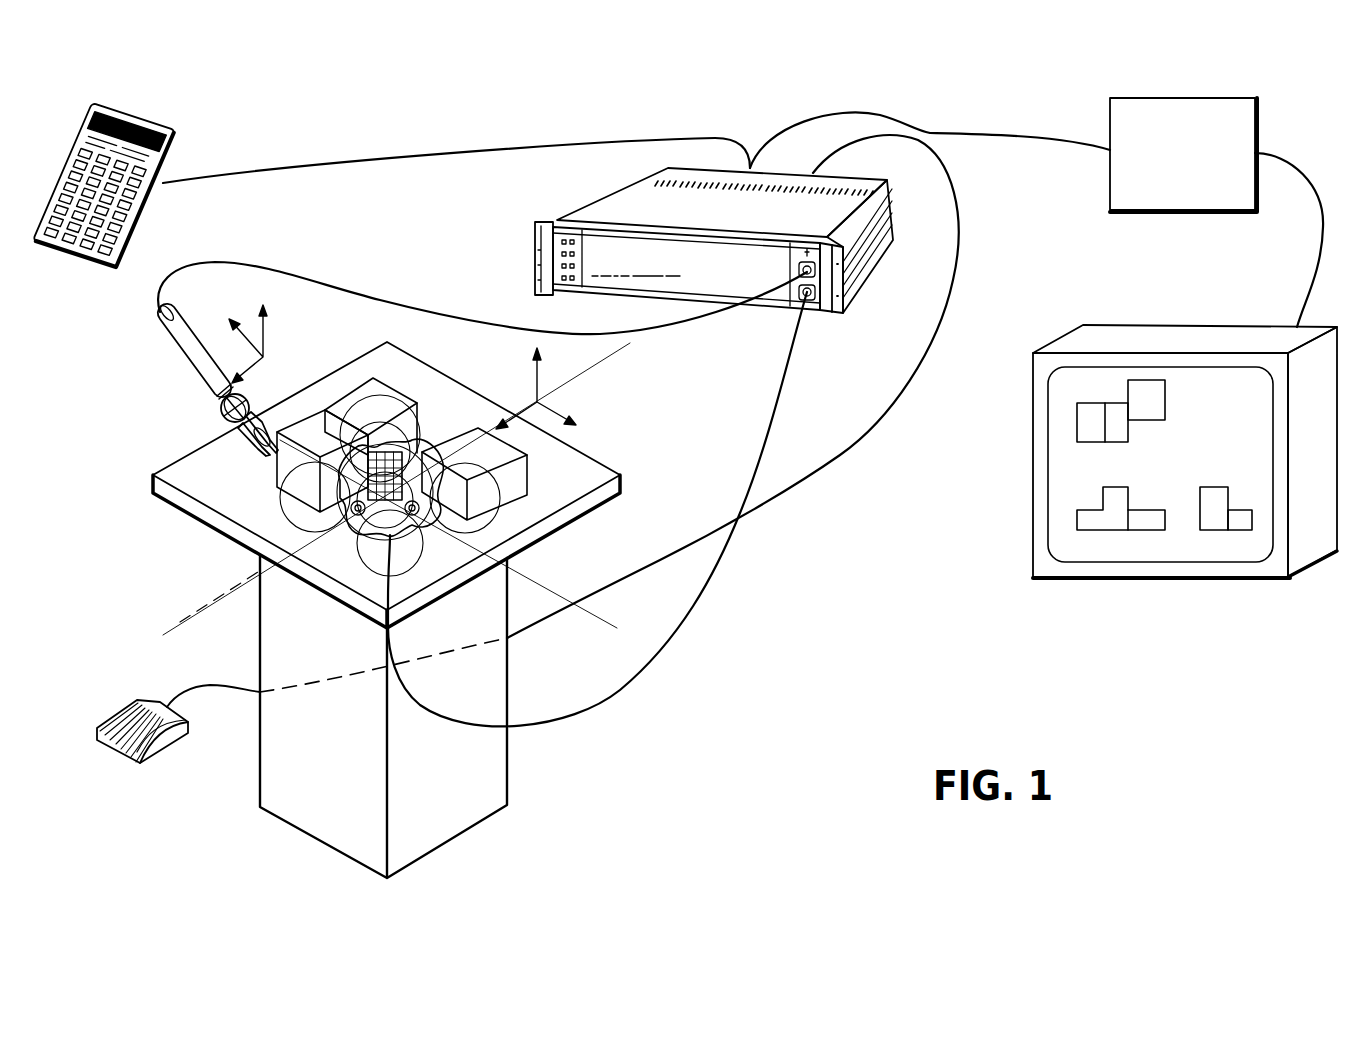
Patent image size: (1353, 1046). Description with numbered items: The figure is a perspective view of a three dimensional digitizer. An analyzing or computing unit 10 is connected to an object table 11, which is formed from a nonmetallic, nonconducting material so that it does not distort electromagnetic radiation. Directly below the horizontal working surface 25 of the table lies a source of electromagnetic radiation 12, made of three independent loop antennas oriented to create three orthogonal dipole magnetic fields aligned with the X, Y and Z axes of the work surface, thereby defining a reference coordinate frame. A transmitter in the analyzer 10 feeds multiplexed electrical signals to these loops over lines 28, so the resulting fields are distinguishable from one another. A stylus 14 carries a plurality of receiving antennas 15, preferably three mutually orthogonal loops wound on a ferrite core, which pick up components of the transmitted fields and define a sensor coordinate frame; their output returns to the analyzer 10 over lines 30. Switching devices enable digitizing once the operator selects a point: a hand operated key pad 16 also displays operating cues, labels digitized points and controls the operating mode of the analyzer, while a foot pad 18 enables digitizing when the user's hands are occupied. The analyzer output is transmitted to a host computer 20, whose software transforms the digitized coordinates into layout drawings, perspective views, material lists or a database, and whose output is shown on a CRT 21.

The analyzing or computing unit 10 is at (685, 193).
The object table 11 is at (590, 453).
The source of electromagnetic radiation 12 is at (375, 535).
The stylus 14 is at (177, 337).
The receiving antennas 15 is at (222, 403).
The hand operated key pad 16 is at (173, 120).
The foot pad or foot switch 18 is at (157, 748).
The host computer 20 is at (1233, 113).
The CRT 21 is at (1173, 337).
The horizontal working surface 25 is at (574, 481).
The lines 28 is at (785, 392).
The lines 30 is at (372, 297).